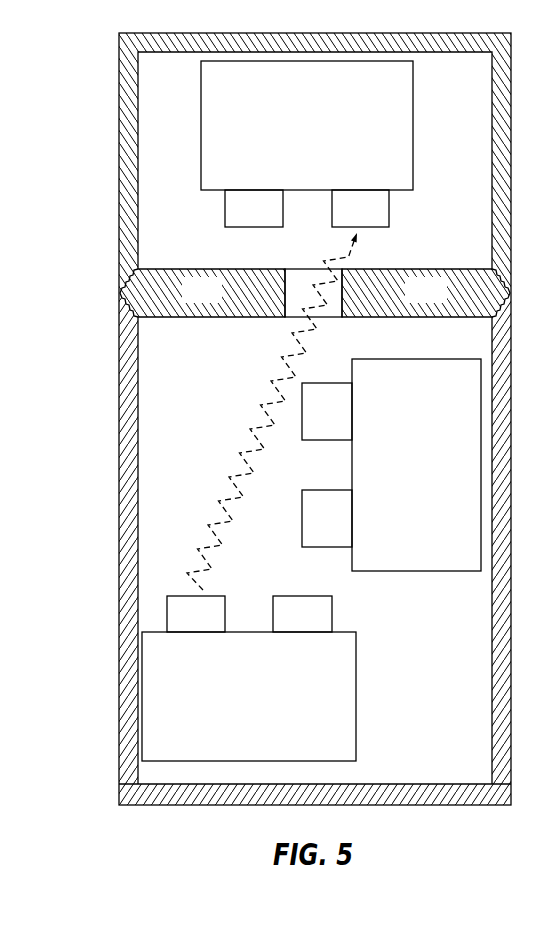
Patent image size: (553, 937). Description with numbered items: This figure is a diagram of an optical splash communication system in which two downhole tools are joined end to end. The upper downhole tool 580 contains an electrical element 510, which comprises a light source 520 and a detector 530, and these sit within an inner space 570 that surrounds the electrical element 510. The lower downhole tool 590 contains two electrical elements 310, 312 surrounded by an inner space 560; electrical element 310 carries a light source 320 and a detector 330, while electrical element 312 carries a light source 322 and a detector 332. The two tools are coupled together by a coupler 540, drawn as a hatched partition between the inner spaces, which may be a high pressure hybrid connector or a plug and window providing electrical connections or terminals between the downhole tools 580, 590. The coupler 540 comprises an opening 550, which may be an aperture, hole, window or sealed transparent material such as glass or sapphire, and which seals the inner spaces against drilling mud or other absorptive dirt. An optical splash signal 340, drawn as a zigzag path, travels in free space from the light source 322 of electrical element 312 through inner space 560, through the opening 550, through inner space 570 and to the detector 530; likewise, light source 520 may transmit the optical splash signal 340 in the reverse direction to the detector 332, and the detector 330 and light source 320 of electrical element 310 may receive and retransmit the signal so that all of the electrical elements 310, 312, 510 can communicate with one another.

The electrical element 310 is at (434, 480).
The electrical element 312 is at (267, 707).
The light source 320 is at (346, 424).
The light source 322 is at (215, 626).
The detector 330 is at (346, 531).
The detector 332 is at (321, 626).
The optical splash signal 340 is at (263, 426).
The electrical element 510 is at (326, 139).
The light source 520 is at (272, 219).
The detector 530 is at (378, 219).
The coupler 540 is at (221, 304).
The opening 550 is at (302, 278).
The inner space 560 is at (155, 540).
The inner space 570 is at (155, 183).
The downhole tool 580 is at (143, 33).
The downhole tool 590 is at (147, 804).